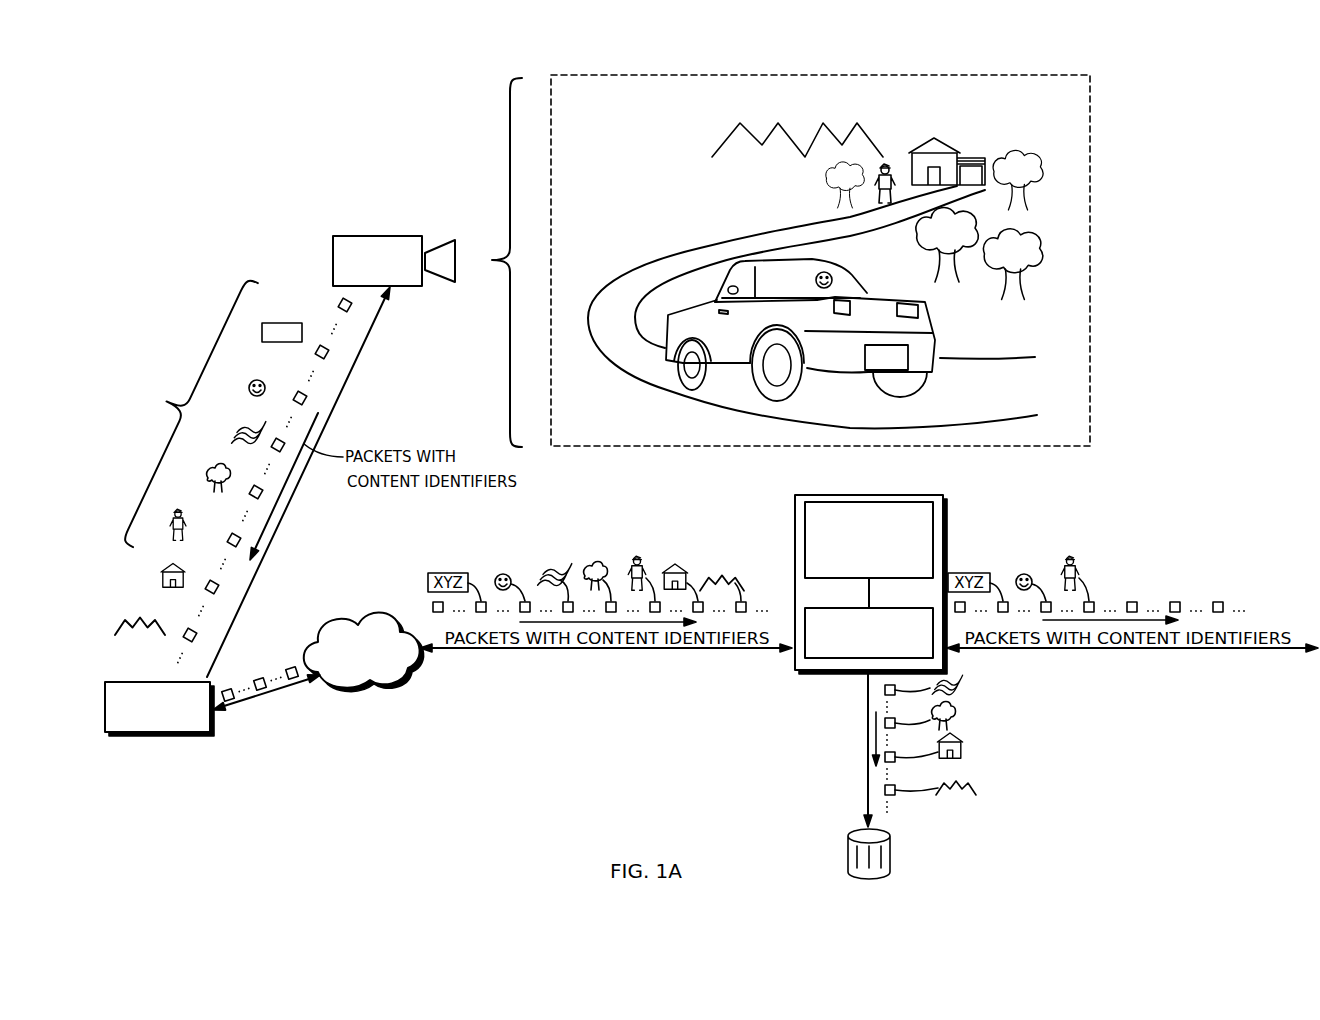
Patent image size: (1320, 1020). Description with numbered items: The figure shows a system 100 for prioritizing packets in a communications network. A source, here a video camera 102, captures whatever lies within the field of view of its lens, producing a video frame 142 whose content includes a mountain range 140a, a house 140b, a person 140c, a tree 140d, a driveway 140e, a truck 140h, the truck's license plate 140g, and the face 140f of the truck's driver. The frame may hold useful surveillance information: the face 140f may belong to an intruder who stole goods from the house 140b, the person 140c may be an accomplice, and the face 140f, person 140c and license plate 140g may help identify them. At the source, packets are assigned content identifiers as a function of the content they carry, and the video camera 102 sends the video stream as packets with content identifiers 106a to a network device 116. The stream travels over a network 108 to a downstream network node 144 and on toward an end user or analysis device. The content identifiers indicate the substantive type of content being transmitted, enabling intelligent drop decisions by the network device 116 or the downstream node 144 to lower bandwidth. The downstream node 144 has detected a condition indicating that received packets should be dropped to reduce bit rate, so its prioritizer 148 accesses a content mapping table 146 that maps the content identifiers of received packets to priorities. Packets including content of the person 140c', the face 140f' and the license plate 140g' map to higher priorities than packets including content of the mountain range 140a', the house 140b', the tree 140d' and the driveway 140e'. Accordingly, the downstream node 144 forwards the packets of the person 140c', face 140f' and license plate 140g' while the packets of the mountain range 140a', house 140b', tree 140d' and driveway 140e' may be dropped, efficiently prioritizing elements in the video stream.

The system 100 is at (329, 125).
The video camera 102 is at (355, 236).
The packets with content identifiers 106a is at (169, 407).
The network 108 is at (358, 695).
The network device 116 is at (118, 735).
The mountain range 140a is at (773, 125).
The house 140b is at (961, 141).
The person 140c is at (906, 153).
The tree 140d is at (802, 185).
The driveway 140e is at (812, 307).
The face 140f is at (856, 263).
The license plate 140g is at (858, 379).
The truck 140h is at (932, 326).
The packets including content of the mountain range 140a' is at (154, 647).
The packets including content of the house 140b' is at (161, 612).
The packets including content of the person 140c' is at (195, 564).
The packets including content of the tree 140d' is at (211, 517).
The packets including content of the driveway 140e' is at (240, 469).
The packets including content of the face 140f' is at (264, 422).
The packets including content of the license plate 140g' is at (283, 375).
The video frame 142 is at (1095, 192).
The downstream network node 144 is at (943, 520).
The content mapping table 146 is at (795, 542).
The prioritizer 148 is at (833, 672).